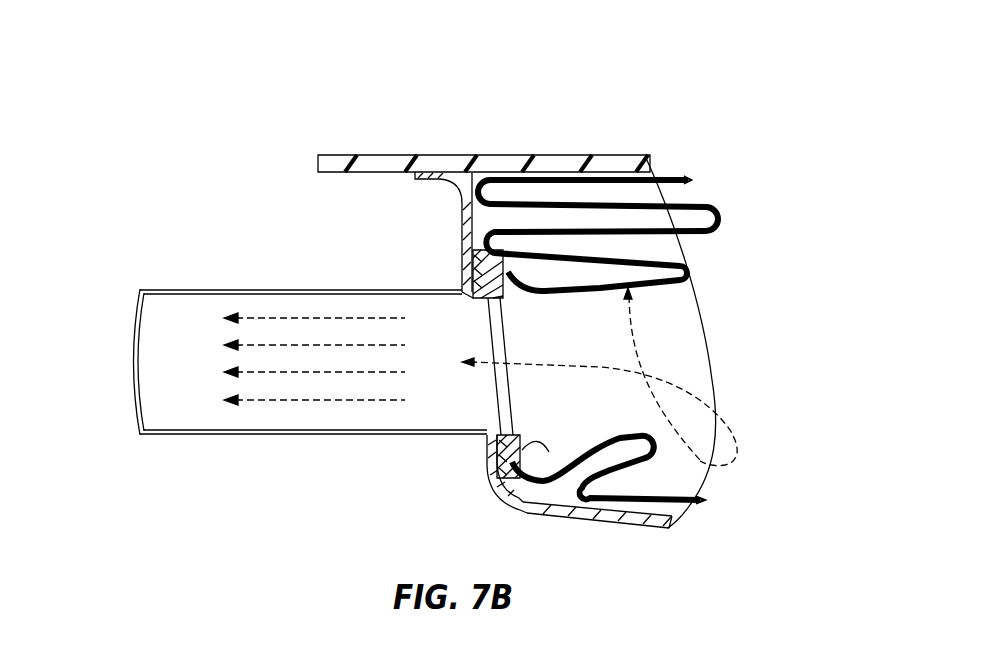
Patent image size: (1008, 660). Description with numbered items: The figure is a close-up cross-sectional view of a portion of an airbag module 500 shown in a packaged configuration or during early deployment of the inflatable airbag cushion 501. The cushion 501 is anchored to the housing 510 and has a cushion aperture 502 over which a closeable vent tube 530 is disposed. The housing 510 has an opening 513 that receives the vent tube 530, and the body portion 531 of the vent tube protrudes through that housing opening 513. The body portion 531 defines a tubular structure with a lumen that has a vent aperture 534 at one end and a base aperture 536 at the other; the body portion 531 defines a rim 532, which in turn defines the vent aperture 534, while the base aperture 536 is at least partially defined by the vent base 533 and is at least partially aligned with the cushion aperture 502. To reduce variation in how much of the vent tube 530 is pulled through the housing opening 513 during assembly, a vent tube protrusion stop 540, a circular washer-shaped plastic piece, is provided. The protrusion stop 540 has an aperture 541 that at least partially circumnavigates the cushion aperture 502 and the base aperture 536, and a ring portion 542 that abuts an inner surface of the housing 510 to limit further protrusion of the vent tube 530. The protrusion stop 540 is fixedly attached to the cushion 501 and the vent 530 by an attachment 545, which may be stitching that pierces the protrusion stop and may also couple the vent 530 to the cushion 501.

The airbag module 500 is at (545, 86).
The inflatable airbag cushion 501 is at (706, 205).
The cushion aperture 502 is at (507, 346).
The housing 510 is at (505, 153).
The housing opening 513 is at (488, 436).
The vent tube 530 is at (248, 240).
The body portion 531 is at (271, 318).
The rim 532 is at (128, 302).
The base portion 533 is at (470, 252).
The vent aperture 534 is at (155, 358).
The base aperture 536 is at (478, 312).
The vent tube protrusion stop 540 is at (485, 343).
The aperture 541 is at (497, 371).
The ring portion 542 is at (515, 470).
The attachment 545 is at (512, 268).